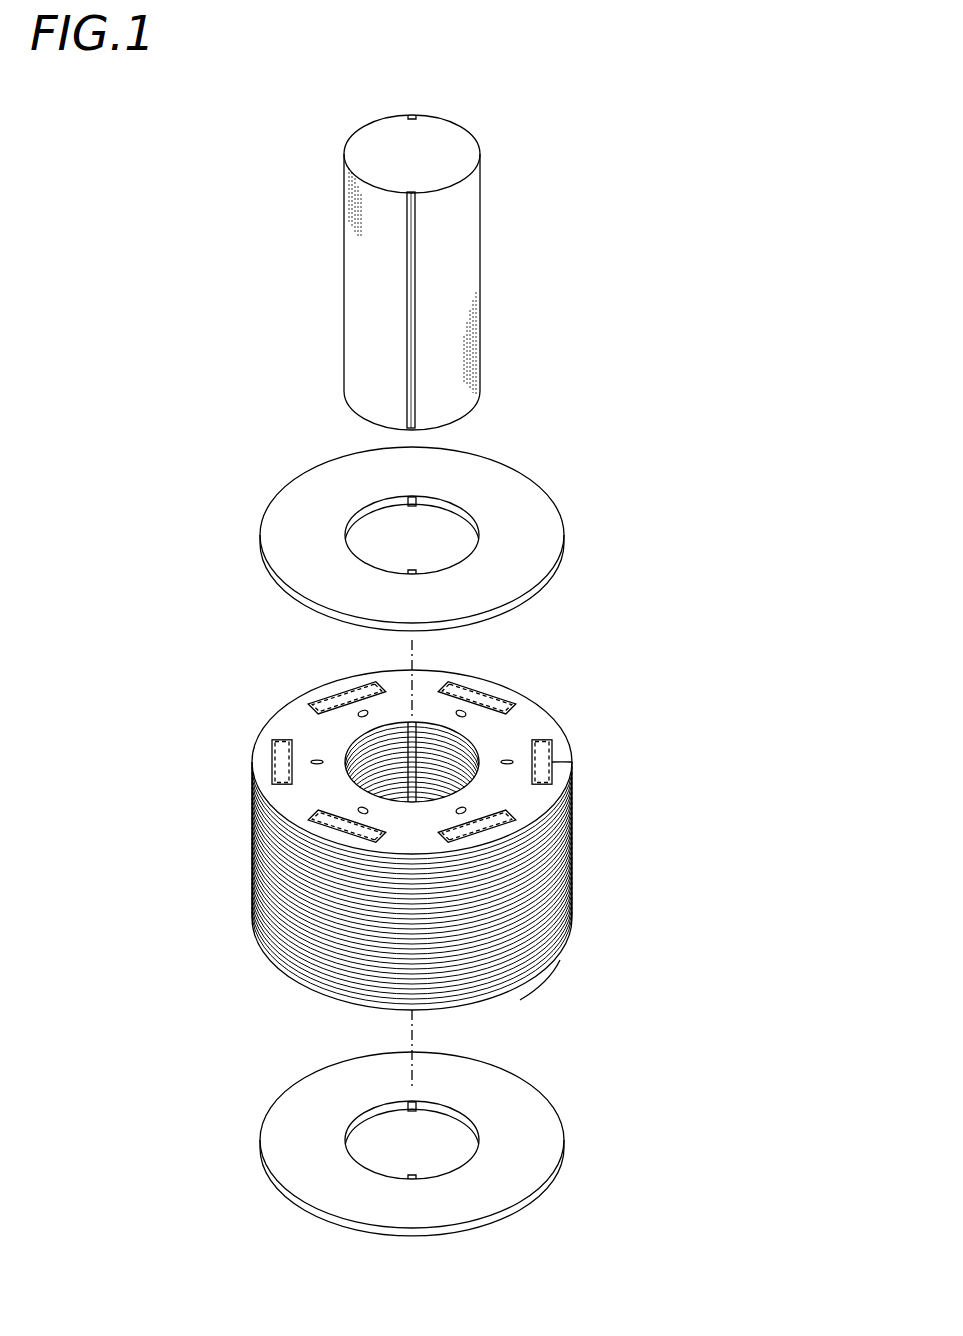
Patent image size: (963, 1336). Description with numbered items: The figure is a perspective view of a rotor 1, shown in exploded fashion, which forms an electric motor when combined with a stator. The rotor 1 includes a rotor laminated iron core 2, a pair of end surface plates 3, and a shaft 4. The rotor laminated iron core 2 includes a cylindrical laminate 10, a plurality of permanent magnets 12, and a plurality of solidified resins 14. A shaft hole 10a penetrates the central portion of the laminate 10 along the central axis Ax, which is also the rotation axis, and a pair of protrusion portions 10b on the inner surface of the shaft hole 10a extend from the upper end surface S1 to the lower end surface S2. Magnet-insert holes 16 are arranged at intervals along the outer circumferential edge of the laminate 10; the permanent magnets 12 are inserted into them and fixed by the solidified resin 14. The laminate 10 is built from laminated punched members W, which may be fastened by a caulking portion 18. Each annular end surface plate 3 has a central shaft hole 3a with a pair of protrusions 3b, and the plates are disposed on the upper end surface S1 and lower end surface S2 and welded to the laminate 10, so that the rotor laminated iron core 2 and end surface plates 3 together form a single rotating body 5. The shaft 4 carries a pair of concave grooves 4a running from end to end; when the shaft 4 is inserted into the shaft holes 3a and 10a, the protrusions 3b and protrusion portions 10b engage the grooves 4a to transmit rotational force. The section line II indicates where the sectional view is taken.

The rotor 1 is at (669, 113).
The rotor laminated iron core 2 is at (694, 680).
The end surface plate 3 is at (664, 524).
The shaft hole 3a is at (451, 527).
The protrusion 3b is at (383, 502).
The shaft 4 is at (468, 238).
The concave groove 4a is at (407, 325).
The rotating body 5 is at (762, 445).
The laminate 10 is at (652, 891).
The shaft hole 10a is at (472, 746).
The protrusion portion 10b is at (393, 722).
The permanent magnet 12 is at (497, 692).
The solidified resin 14 is at (273, 762).
The magnet-insert hole 16 is at (470, 687).
The caulking portion 18 is at (313, 757).
The central axis Ax is at (418, 648).
The upper end surface S1 is at (531, 805).
The lower end surface S2 is at (536, 984).
The punched member W is at (268, 960).
The section line II is at (238, 762).